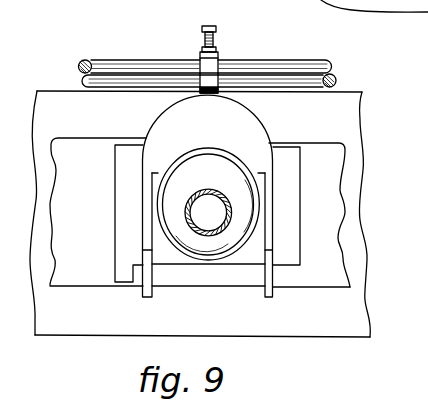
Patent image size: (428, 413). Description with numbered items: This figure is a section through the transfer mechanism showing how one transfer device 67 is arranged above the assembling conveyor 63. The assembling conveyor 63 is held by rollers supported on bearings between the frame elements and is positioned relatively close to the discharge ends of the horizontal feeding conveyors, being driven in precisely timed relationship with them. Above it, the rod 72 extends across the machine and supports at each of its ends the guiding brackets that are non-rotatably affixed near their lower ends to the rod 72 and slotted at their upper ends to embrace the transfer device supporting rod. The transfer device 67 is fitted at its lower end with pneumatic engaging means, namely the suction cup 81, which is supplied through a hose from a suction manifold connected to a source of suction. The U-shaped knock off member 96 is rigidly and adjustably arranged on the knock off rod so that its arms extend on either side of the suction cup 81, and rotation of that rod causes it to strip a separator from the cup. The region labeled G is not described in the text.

The assembling conveyor 63 is at (325, 153).
The knock off member 96 is at (253, 129).
The bearing housing block G is at (289, 210).
The suction cup 81 is at (208, 248).
The transfer device 67 is at (227, 192).
The rod 72 is at (289, 66).